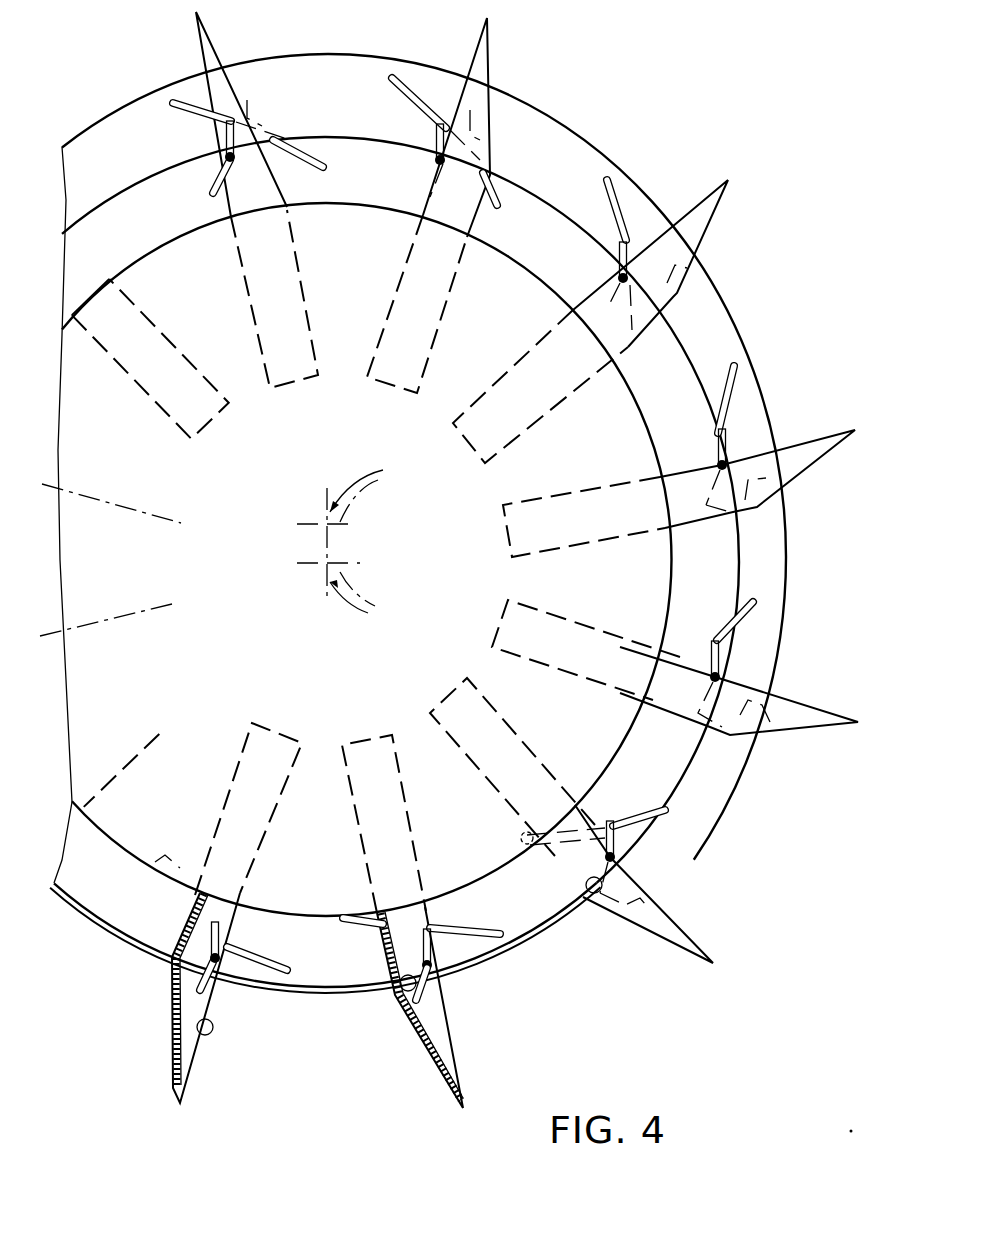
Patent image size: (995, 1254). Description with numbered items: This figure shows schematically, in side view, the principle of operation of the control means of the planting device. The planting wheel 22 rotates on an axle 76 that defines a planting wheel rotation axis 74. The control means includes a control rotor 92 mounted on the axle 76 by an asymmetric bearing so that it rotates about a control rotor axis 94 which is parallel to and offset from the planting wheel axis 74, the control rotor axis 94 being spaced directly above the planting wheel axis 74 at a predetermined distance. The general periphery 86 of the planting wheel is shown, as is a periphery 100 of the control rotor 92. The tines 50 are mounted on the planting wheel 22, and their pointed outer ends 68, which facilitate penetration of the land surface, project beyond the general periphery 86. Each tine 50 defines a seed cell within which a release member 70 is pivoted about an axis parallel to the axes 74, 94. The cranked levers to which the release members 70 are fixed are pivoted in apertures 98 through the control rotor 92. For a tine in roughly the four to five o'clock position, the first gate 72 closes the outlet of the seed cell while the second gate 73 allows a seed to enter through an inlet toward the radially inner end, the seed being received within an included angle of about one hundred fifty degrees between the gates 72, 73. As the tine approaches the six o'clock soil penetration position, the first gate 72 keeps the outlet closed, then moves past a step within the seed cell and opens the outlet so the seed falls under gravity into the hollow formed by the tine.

The planting wheel 22 is at (618, 127).
The control rotor 92 is at (734, 345).
The periphery of the control rotor 100 is at (704, 797).
The control rotor axis 94 is at (374, 490).
The planting wheel rotation axis 74 is at (366, 598).
The tine 50 is at (172, 1043).
The release member 70 is at (432, 1008).
The pointed outer end 68 is at (442, 1090).
The general periphery of the planting wheel 86 is at (641, 850).
The aperture 98 is at (606, 834).
The second gate 73 is at (388, 948).
The axle 76 is at (437, 987).
The first gate 72 is at (437, 993).